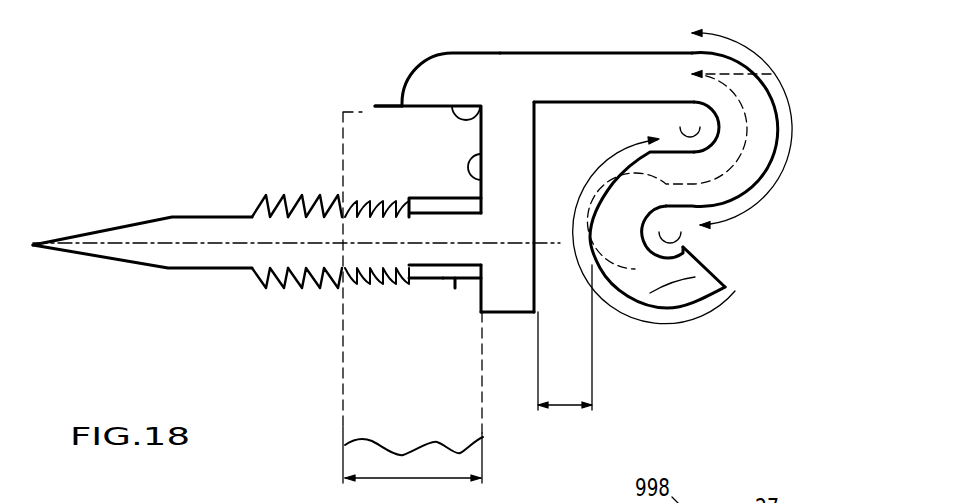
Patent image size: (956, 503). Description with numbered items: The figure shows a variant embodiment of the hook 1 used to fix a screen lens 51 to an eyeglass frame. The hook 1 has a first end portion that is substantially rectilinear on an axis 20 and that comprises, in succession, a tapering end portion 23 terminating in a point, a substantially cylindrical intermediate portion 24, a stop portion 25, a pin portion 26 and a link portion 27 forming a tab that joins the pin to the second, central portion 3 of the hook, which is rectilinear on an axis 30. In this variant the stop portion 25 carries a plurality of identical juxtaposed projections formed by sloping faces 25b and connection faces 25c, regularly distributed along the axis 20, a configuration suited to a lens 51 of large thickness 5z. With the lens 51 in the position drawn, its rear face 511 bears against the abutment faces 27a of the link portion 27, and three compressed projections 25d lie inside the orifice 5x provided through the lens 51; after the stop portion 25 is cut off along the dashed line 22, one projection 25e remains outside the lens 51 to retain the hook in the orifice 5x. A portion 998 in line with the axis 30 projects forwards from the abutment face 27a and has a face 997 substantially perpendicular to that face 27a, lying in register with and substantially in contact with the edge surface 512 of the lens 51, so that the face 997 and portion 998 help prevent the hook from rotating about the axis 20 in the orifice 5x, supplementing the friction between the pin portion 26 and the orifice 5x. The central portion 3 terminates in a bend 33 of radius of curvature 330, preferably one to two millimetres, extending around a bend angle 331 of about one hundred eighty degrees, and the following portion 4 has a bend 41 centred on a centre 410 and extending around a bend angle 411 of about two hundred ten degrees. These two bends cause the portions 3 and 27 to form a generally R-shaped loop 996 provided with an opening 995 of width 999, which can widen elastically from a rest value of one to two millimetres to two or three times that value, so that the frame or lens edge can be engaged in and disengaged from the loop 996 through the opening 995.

The hook 1 is at (276, 67).
The axis 20 is at (170, 246).
The dashed line 22 is at (300, 258).
The end portion 23 is at (97, 253).
The intermediate portion 24 is at (204, 232).
The stop portion 25 is at (306, 236).
The sloping faces 25b is at (265, 280).
The connection face 25c is at (292, 200).
The compressed projections 25d is at (355, 200).
The projection 25e is at (335, 193).
The pin portion 26 is at (445, 243).
The link portion 27 is at (534, 180).
The abutment faces 27a is at (485, 152).
The second portion 3 is at (598, 63).
The axis 30 is at (782, 70).
The bend 33 is at (767, 117).
The bend angle 331 is at (788, 130).
The radius of curvature 330 is at (741, 142).
The loop 996 is at (650, 132).
The face 997 is at (481, 121).
The projecting portion 998 is at (440, 72).
The opening 995 is at (560, 236).
The opening width 999 is at (565, 352).
The third portion 4 is at (783, 224).
The bend 41 is at (707, 272).
The center of curvature 410 is at (620, 249).
The bend angle 411 is at (645, 322).
The orifice 5x is at (455, 284).
The lens thickness 5z is at (413, 489).
The lens 51 is at (355, 425).
The rear face 511 is at (483, 400).
The edge surface 512 is at (380, 106).